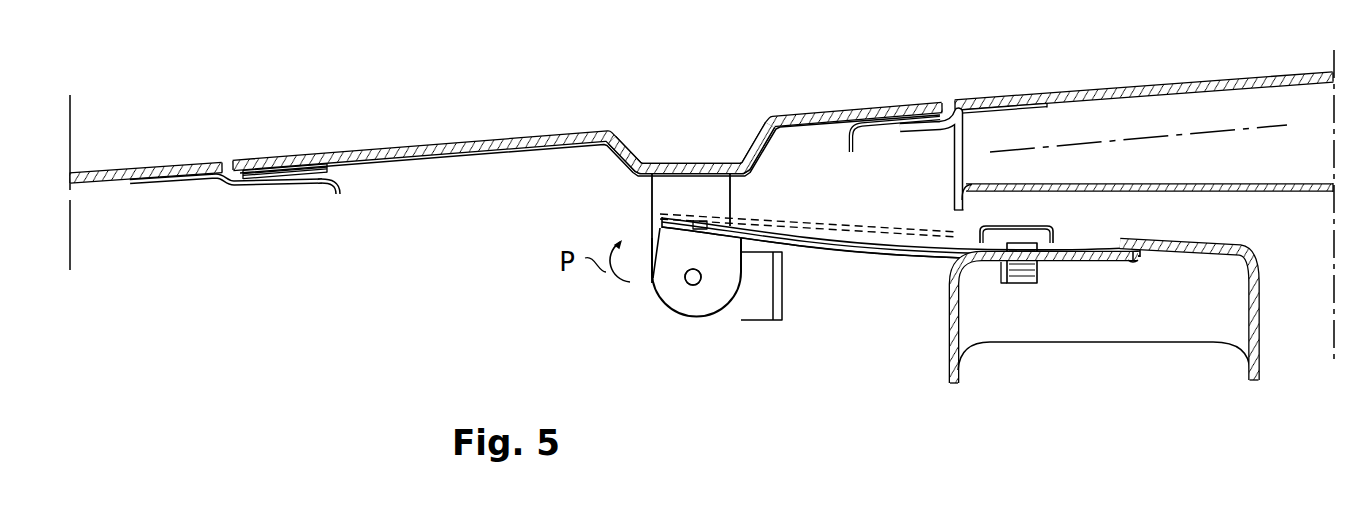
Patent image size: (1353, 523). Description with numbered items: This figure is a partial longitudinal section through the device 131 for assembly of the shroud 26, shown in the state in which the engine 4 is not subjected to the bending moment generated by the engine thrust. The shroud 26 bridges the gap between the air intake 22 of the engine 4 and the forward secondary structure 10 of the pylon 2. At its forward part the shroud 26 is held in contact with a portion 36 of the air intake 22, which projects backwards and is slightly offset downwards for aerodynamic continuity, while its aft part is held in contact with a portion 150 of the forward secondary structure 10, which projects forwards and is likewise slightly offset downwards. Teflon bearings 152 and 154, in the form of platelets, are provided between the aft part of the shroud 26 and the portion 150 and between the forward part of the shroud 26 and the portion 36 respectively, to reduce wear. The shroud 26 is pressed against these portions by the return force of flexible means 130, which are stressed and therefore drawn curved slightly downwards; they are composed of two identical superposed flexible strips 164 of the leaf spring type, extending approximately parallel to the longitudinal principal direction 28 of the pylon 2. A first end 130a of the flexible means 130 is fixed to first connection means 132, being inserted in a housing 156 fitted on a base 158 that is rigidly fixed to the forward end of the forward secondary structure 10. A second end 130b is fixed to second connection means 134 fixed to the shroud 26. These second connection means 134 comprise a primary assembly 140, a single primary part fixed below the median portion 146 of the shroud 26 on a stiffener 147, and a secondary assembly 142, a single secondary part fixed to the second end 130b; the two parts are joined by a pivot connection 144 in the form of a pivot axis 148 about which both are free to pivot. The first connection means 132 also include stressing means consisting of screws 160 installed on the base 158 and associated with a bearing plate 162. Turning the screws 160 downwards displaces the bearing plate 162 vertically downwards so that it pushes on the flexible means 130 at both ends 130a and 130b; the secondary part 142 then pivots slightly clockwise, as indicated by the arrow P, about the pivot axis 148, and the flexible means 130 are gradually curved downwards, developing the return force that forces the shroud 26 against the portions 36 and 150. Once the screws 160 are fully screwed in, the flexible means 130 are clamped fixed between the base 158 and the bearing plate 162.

The pylon 2 is at (1260, 76).
The engine 4 is at (118, 165).
The forward secondary structure 10 is at (1150, 85).
The air intake 22 is at (194, 160).
The shroud 26 is at (600, 128).
The longitudinal principal direction 28 is at (1110, 138).
The portion of the air intake 36 is at (308, 184).
The flexible means 130 is at (858, 226).
The first end of the flexible means 130a is at (1117, 247).
The second end of the flexible means 130b is at (676, 212).
The assembly device 131 is at (730, 350).
The first connection means 132 is at (1268, 376).
The second connection means 134 is at (640, 212).
The primary assembly 140 is at (703, 195).
The secondary assembly 142 is at (725, 262).
The pivot connection 144 is at (675, 286).
The median portion of the shroud 146 is at (727, 120).
The stiffener 147 is at (415, 164).
The pivot axis 148 is at (694, 286).
The portion of the forward secondary structure 150 is at (947, 100).
The Teflon bearing 152 is at (893, 110).
The Teflon bearing 154 is at (284, 183).
The housing 156 is at (1133, 262).
The base 158 is at (1165, 237).
The screws 160 is at (1022, 284).
The bearing plate 162 is at (973, 240).
The flexible strips 164 is at (880, 255).